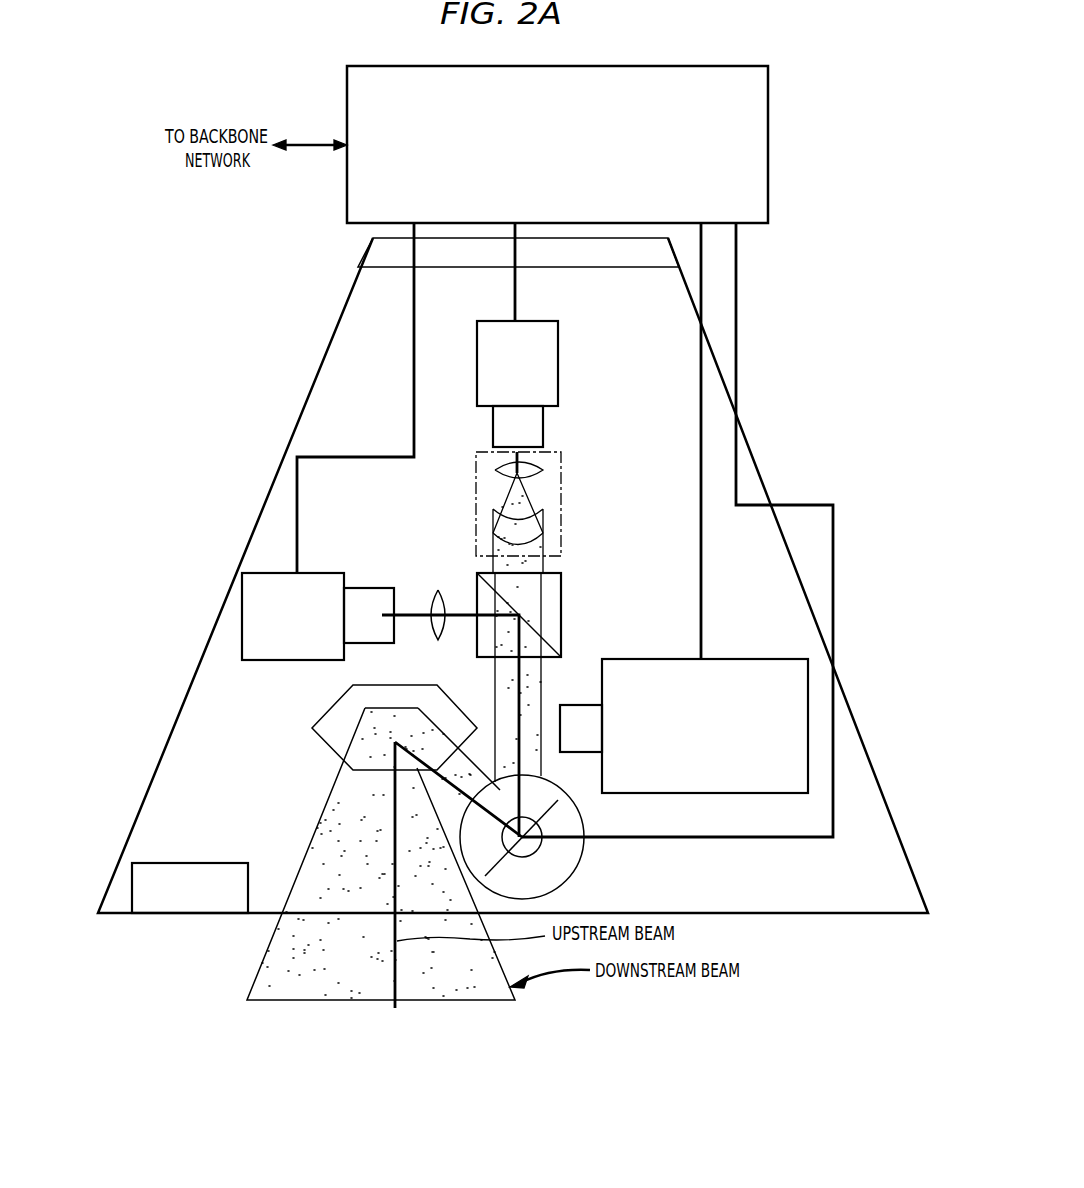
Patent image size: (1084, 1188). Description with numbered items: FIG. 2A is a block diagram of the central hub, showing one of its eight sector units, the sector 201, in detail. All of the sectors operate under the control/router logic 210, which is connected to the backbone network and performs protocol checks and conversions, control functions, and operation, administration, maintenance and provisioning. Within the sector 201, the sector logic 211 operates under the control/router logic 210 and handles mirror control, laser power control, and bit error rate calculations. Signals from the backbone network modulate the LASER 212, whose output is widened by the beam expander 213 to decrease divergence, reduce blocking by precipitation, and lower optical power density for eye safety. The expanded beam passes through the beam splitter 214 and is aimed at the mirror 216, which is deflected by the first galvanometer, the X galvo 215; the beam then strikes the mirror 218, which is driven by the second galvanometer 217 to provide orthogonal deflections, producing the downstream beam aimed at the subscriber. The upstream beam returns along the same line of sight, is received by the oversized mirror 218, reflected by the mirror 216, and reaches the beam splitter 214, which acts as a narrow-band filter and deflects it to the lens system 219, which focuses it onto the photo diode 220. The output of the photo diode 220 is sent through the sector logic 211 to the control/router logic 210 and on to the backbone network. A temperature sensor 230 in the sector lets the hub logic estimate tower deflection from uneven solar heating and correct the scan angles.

The sector 201 is at (150, 783).
The control/router logic 210 is at (769, 93).
The sector logic 211 is at (677, 252).
The LASER 212 is at (477, 350).
The beam expander 213 is at (562, 488).
The beam splitter 214 is at (562, 620).
The X galvo 215 is at (575, 875).
The mirror 216 is at (578, 823).
The second galvanometer 217 is at (737, 659).
The mirror 218 is at (395, 685).
The lens system 219 is at (432, 600).
The photo diode 220 is at (270, 661).
The temperature sensor 230 is at (215, 862).